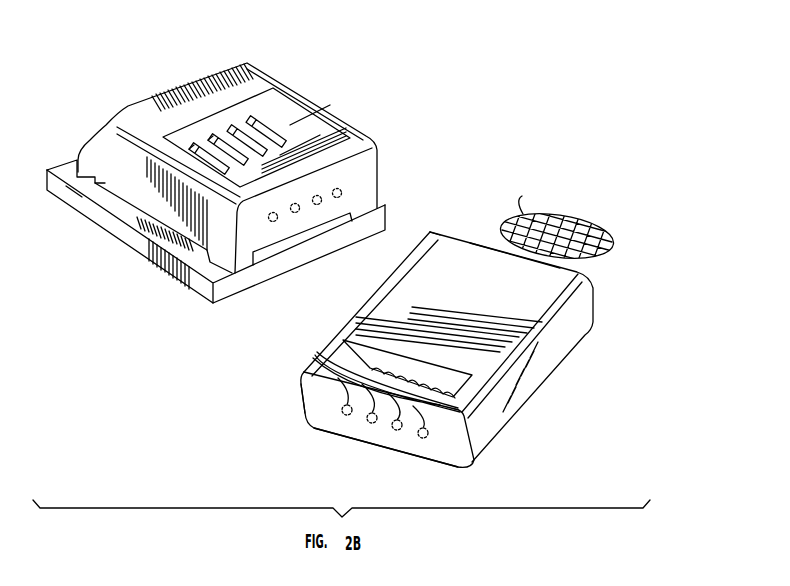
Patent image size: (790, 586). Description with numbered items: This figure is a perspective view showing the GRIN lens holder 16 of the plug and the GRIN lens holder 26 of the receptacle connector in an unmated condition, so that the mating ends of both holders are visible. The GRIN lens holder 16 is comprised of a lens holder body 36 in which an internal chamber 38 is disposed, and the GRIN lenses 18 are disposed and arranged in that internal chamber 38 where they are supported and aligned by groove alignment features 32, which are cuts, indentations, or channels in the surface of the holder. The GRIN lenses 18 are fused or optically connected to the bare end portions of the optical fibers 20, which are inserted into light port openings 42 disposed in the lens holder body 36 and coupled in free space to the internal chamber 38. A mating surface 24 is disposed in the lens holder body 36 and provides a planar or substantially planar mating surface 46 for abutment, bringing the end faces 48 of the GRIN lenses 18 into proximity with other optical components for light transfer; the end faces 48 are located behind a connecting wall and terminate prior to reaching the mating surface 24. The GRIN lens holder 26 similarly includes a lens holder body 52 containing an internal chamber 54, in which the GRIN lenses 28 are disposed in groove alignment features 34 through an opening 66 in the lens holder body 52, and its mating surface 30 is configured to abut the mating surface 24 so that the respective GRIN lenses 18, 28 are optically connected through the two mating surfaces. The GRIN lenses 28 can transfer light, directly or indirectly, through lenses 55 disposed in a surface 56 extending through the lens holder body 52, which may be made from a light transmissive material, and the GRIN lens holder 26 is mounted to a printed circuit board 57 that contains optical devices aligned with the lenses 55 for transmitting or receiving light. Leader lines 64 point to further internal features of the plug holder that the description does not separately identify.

The GRIN lens holder 16 is at (552, 390).
The GRIN lenses 18 is at (348, 421).
The optical fibers 20 is at (605, 252).
The mating surface 24 is at (455, 457).
The GRIN lens holder 26 is at (135, 78).
The GRIN lenses 28 is at (284, 150).
The mating surface 30 is at (242, 250).
The groove alignment features 32 is at (420, 388).
The groove alignment features 34 is at (232, 122).
The lens holder body 36 is at (440, 256).
The internal chamber 38 is at (461, 389).
The light port openings 42 is at (478, 231).
The planar mating surface 46 is at (307, 390).
The end faces 48 is at (318, 356).
The lens holder body 52 is at (370, 139).
The internal chamber 54 is at (297, 143).
The lenses 55 is at (76, 208).
The surface 56 is at (103, 193).
The printed circuit board 57 is at (143, 250).
The conductors 64 is at (380, 352).
The opening 66 is at (310, 114).